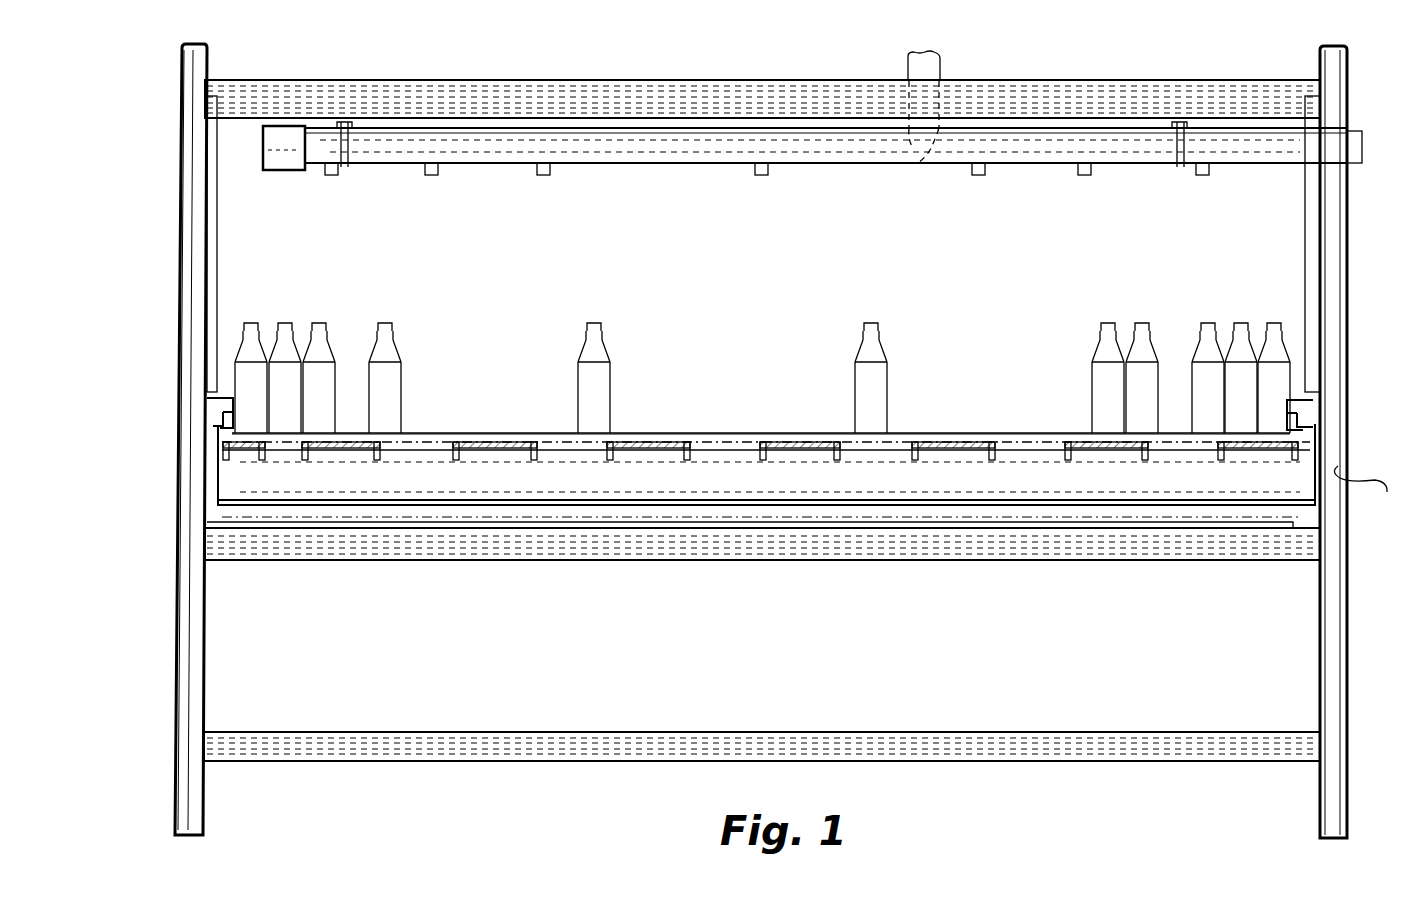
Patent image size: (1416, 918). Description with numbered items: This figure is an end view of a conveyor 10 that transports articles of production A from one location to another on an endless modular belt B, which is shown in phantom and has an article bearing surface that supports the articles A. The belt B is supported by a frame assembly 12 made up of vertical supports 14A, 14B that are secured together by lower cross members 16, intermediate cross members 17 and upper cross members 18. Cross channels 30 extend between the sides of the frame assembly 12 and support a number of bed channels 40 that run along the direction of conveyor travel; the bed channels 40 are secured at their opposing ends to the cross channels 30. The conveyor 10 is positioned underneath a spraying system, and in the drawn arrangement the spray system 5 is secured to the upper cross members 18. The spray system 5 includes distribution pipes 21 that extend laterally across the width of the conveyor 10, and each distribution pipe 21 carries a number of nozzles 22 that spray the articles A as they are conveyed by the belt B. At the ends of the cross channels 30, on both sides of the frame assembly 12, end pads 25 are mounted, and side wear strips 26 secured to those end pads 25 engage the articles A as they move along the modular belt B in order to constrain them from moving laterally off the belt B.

The sensor 5 is at (930, 66).
The conveyor 10 is at (500, 383).
The frame assembly 12 is at (1366, 492).
The vertical support 14A is at (1328, 580).
The vertical support 14B is at (186, 478).
The lower cross member 16 is at (1042, 747).
The intermediate cross member 17 is at (1135, 548).
The upper cross member 18 is at (1248, 88).
The distribution pipe 21 is at (698, 147).
The nozzle 22 is at (431, 176).
The end pad 25 is at (212, 420).
The side wear strip 26 is at (218, 402).
The cross channel 30 is at (1287, 472).
The bed channel 40 is at (348, 456).
The articles of production A is at (368, 352).
The modular belt B is at (553, 433).